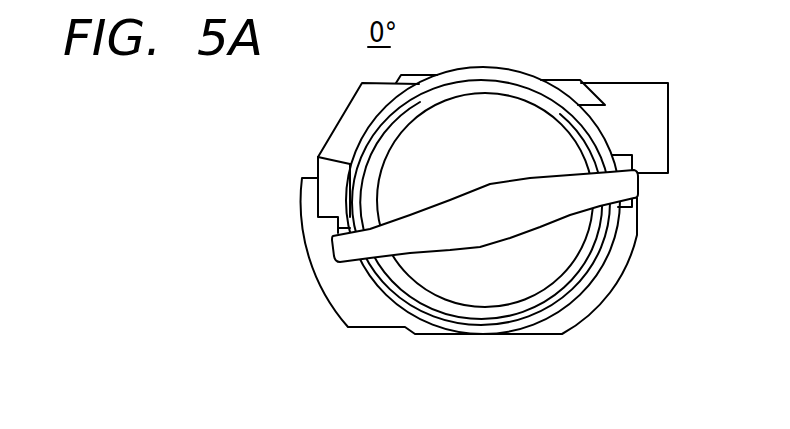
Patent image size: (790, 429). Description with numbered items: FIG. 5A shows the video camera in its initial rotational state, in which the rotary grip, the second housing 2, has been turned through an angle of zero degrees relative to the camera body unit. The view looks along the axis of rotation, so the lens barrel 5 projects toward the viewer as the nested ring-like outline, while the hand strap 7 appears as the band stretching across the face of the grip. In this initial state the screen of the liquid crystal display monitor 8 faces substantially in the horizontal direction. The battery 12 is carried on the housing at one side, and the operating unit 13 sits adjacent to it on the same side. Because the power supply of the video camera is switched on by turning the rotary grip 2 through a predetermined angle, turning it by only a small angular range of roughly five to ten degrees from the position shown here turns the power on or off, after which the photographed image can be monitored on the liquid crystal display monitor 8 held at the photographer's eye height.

The second housing 2 is at (557, 253).
The lens barrel 5 is at (631, 93).
The hand strap 7 is at (463, 242).
The liquid crystal display monitor 8 is at (347, 112).
The battery 12 is at (315, 281).
The operating unit 13 is at (327, 198).